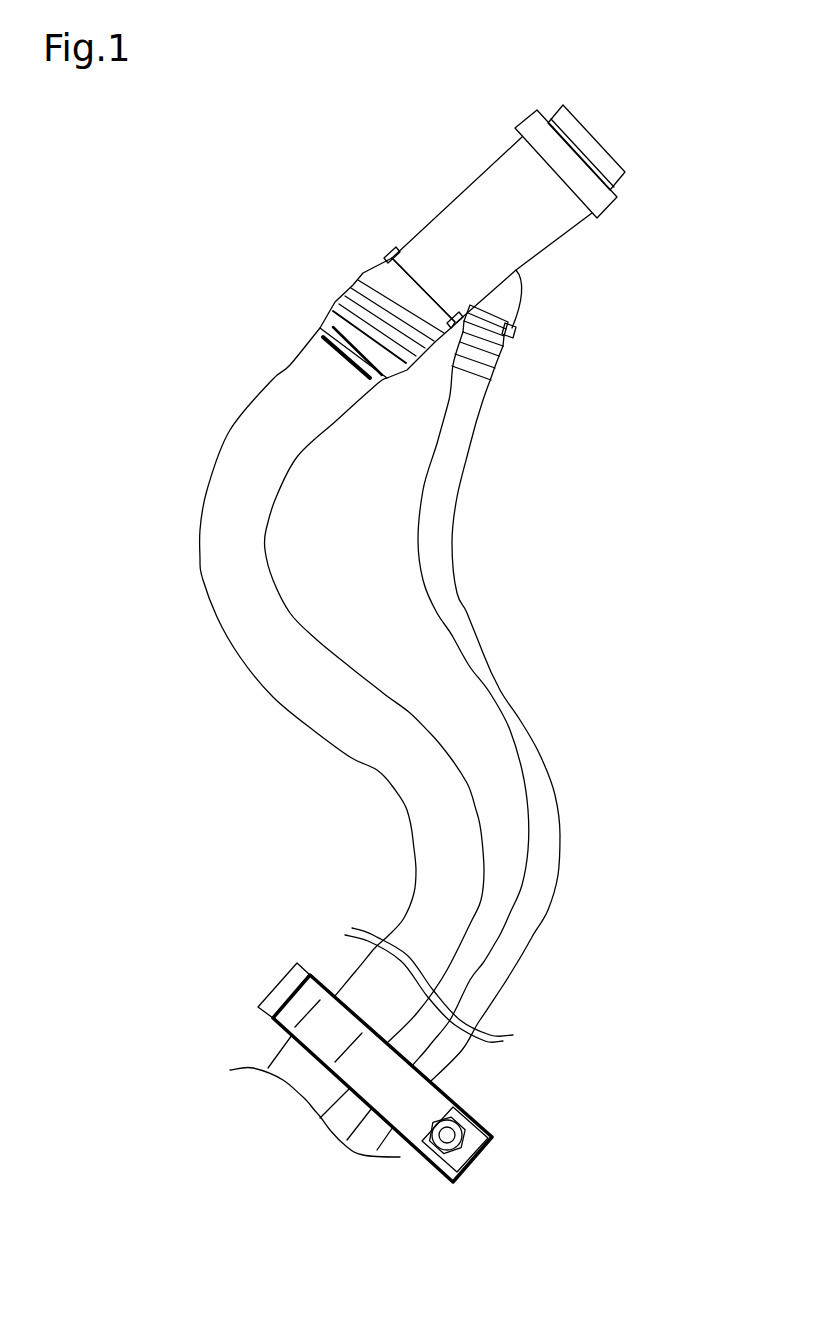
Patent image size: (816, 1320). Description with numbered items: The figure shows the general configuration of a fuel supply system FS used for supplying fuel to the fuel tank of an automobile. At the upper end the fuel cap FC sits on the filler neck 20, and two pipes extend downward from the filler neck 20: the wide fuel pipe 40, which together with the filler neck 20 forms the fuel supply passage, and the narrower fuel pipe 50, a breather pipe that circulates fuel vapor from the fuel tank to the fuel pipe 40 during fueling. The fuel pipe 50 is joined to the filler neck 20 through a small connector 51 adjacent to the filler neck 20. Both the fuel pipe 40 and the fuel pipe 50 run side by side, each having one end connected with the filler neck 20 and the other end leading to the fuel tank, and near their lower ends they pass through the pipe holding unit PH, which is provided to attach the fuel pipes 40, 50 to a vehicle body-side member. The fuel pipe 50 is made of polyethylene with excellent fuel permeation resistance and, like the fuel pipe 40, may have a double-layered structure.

The fuel supply system FS is at (268, 297).
The fuel cap FC is at (600, 209).
The filler neck 20 is at (547, 253).
The breather pipe connector 51 is at (500, 362).
The fuel pipe 50 is at (468, 680).
The fuel pipe 40 is at (202, 575).
The pipe holding unit PH is at (453, 1097).